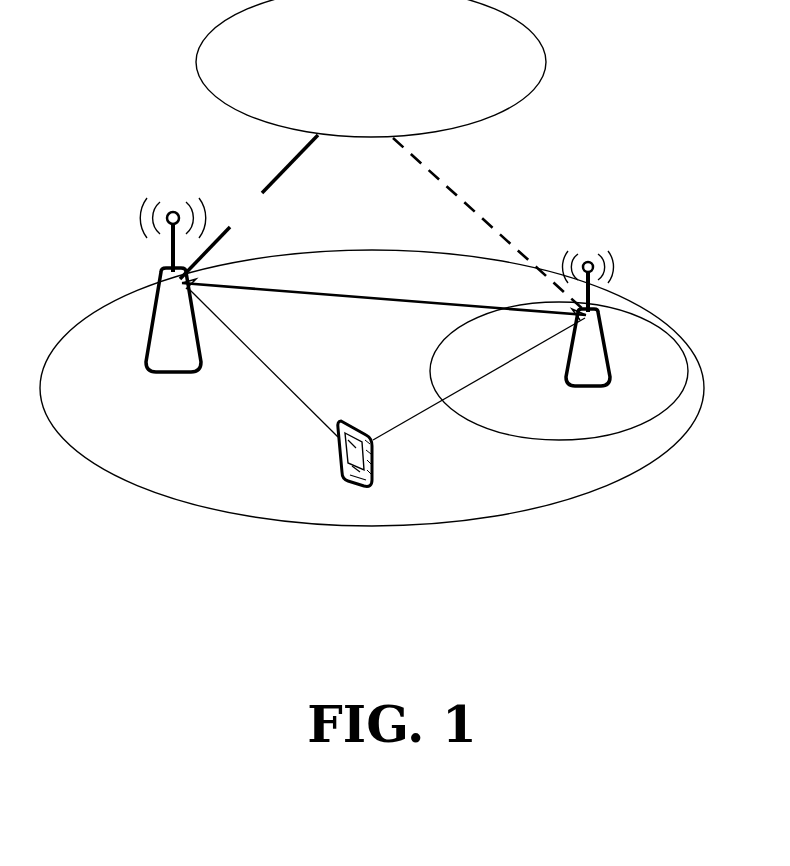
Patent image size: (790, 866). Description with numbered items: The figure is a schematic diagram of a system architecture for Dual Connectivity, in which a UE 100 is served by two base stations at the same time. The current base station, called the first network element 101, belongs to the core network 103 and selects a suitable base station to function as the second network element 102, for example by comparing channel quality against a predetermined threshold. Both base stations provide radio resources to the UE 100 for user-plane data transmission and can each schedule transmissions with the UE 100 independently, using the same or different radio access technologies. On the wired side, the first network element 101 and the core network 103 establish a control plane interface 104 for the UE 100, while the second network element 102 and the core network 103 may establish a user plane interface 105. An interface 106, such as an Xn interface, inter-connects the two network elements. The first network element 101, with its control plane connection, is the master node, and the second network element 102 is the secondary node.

The UE 100 is at (357, 474).
The first network element 101 is at (173, 304).
The second network element 102 is at (587, 337).
The core network 103 is at (371, 68).
The control plane interface 104 is at (249, 207).
The user plane interface 105 is at (489, 224).
The interface 106 is at (384, 295).